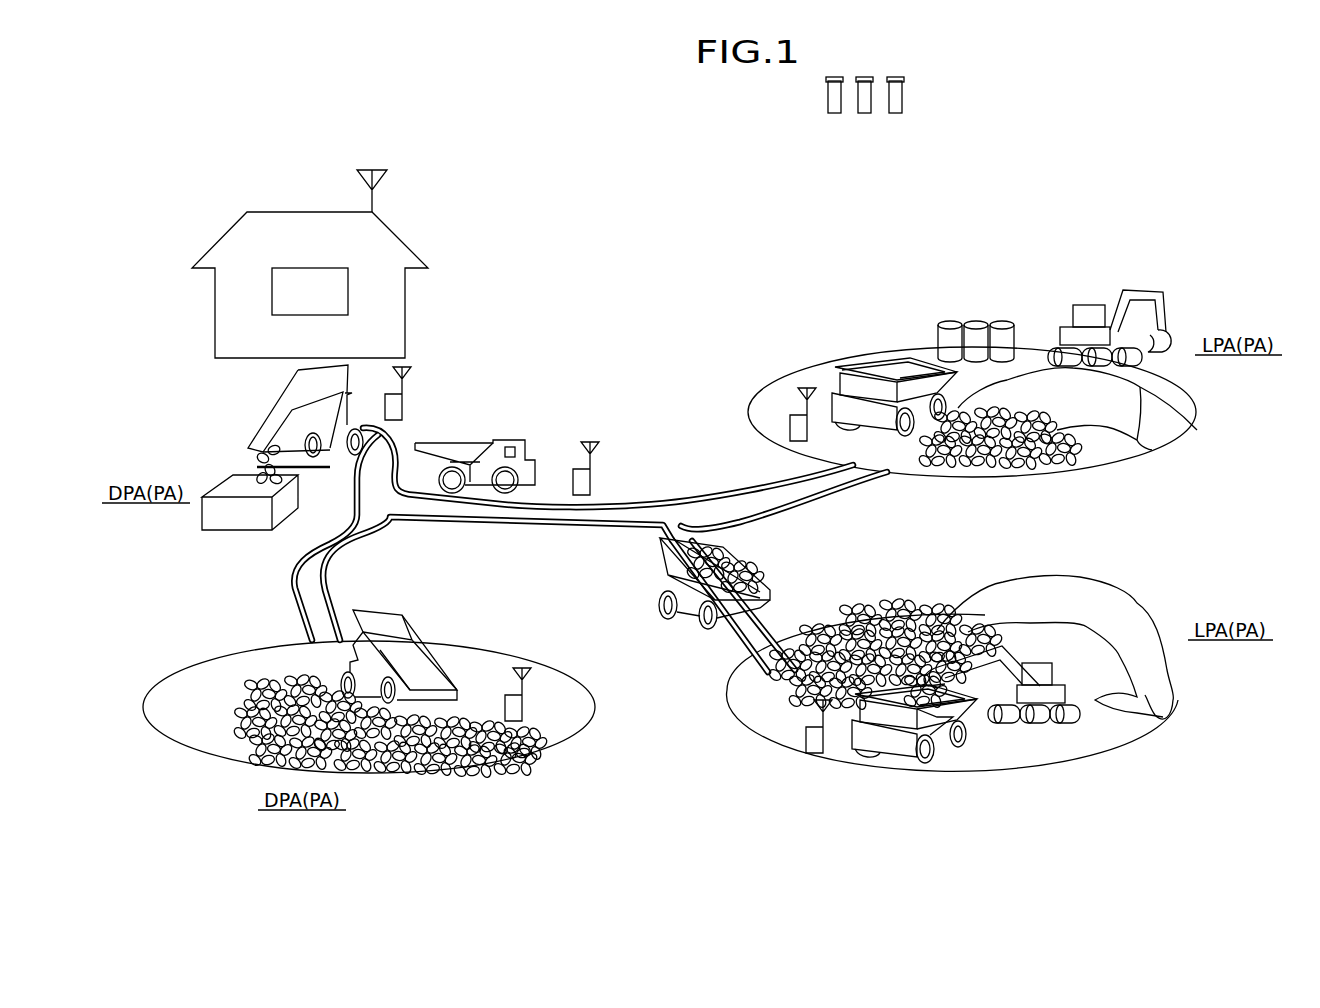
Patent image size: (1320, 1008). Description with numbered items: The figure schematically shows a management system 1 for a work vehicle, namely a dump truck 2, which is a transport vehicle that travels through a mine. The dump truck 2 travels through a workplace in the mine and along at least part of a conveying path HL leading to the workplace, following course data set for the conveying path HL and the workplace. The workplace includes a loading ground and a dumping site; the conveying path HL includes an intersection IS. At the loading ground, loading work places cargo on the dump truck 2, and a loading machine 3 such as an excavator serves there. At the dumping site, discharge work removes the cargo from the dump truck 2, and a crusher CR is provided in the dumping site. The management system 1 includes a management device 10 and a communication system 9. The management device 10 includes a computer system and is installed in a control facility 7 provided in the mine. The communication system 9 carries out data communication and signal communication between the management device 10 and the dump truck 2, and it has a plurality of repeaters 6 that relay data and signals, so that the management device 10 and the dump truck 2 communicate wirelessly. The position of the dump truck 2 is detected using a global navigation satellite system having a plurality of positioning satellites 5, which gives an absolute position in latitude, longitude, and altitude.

The management system 1 is at (1002, 168).
The dump truck 2 is at (280, 395).
The loading machine 3 is at (1090, 305).
The positioning satellite 5 is at (894, 133).
The repeater 6 is at (406, 384).
The control facility 7 is at (290, 214).
The communication system 9 is at (601, 382).
The management device 10 is at (312, 268).
The crusher CR is at (240, 521).
The intersection IS is at (393, 518).
The conveying path HL is at (523, 527).